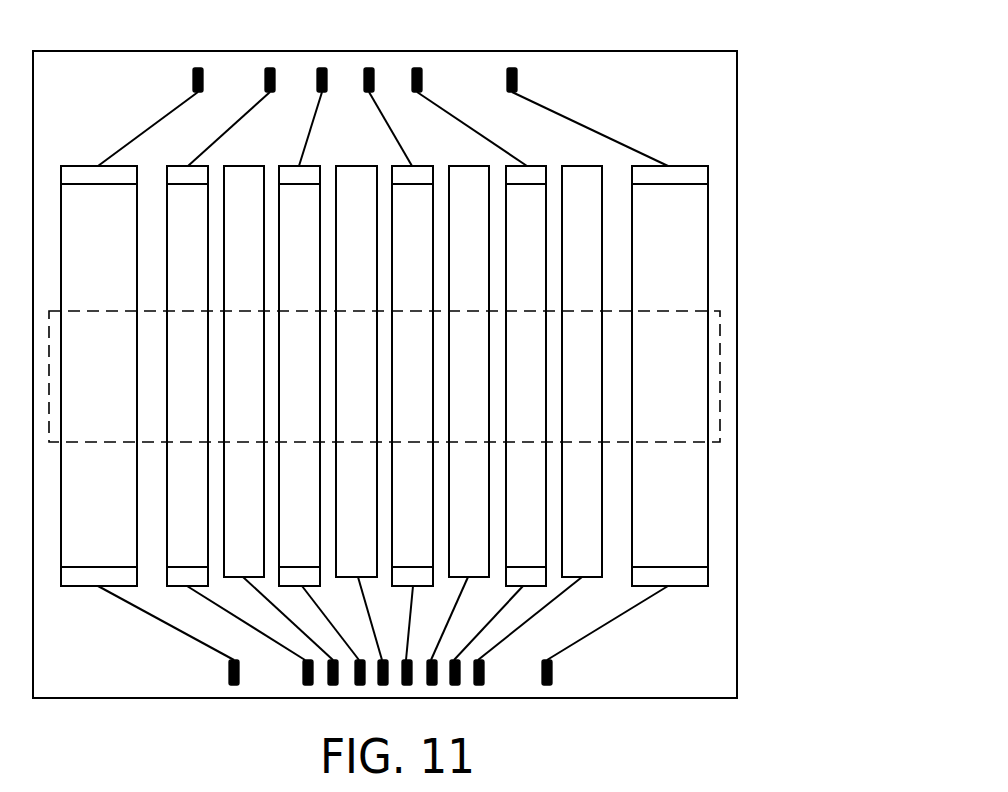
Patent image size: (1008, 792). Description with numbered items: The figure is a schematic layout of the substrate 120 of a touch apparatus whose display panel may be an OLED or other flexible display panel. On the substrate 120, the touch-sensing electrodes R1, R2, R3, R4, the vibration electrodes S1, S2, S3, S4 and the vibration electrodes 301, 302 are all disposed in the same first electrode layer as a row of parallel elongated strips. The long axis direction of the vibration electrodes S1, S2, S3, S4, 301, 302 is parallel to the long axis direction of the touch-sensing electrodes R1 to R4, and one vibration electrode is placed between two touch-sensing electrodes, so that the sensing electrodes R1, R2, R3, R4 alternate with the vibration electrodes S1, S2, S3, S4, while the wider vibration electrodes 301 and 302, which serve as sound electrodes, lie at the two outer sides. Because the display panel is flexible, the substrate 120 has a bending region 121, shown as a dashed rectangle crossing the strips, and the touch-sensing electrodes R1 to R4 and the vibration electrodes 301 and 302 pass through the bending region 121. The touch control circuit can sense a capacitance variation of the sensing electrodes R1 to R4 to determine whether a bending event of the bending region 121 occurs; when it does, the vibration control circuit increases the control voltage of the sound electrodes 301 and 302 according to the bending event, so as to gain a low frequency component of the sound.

The substrate 120 is at (633, 51).
The bending region 121 is at (719, 378).
The vibration electrode 301 is at (150, 376).
The vibration electrode 302 is at (607, 376).
The vibration electrode S1 is at (240, 376).
The vibration electrode S2 is at (322, 376).
The vibration electrode S3 is at (398, 376).
The vibration electrode S4 is at (479, 376).
The touch-sensing electrode R1 is at (281, 425).
The touch-sensing electrode R2 is at (362, 425).
The touch-sensing electrode R3 is at (458, 425).
The touch-sensing electrode R4 is at (538, 425).